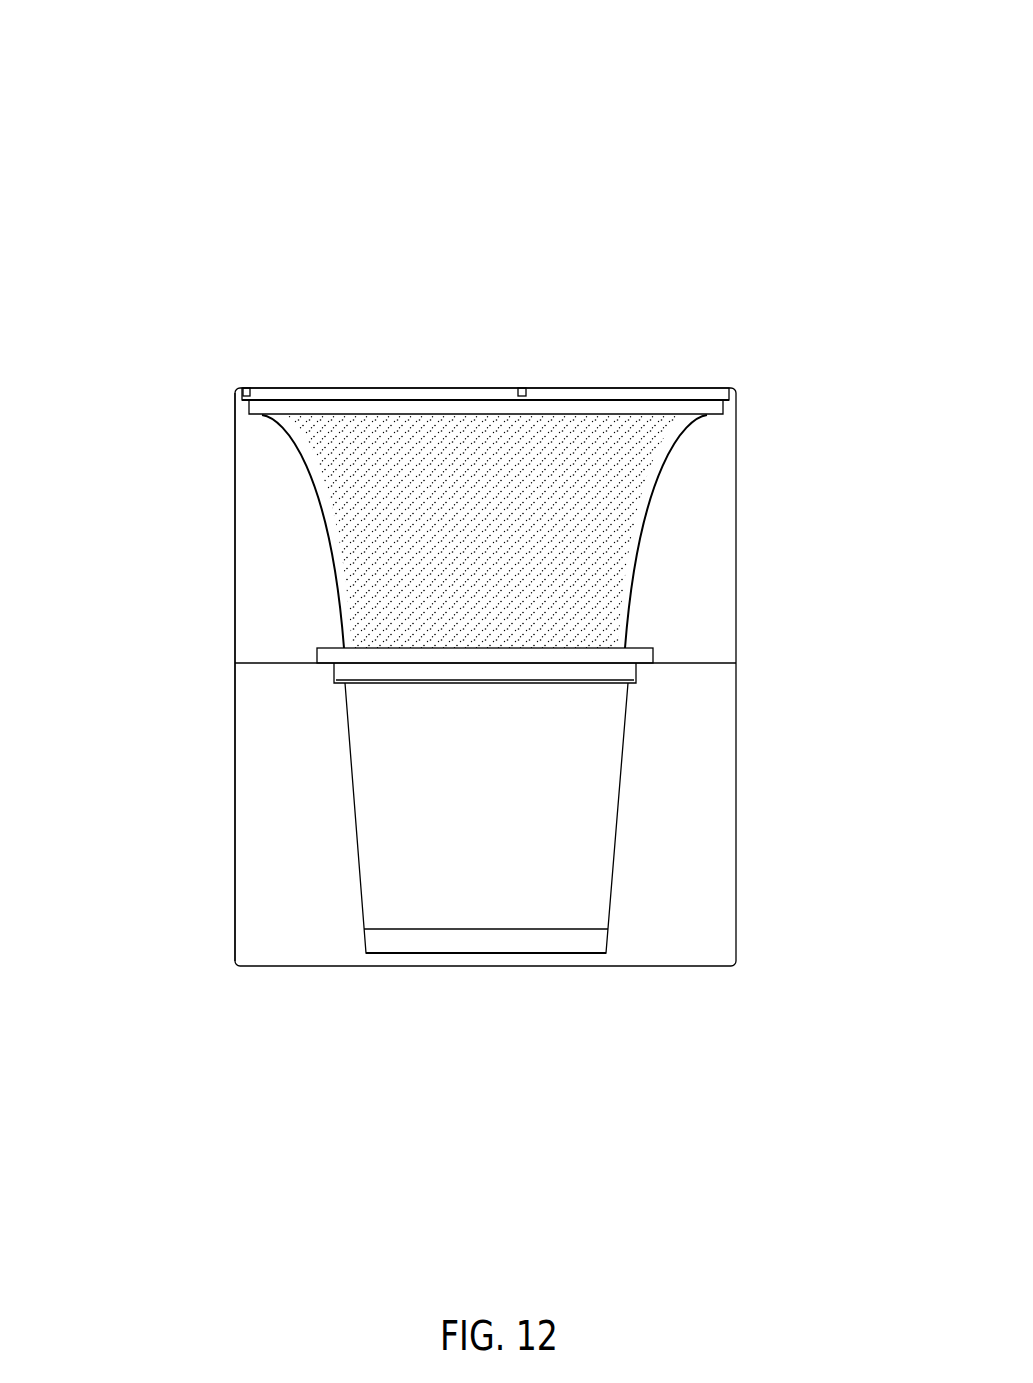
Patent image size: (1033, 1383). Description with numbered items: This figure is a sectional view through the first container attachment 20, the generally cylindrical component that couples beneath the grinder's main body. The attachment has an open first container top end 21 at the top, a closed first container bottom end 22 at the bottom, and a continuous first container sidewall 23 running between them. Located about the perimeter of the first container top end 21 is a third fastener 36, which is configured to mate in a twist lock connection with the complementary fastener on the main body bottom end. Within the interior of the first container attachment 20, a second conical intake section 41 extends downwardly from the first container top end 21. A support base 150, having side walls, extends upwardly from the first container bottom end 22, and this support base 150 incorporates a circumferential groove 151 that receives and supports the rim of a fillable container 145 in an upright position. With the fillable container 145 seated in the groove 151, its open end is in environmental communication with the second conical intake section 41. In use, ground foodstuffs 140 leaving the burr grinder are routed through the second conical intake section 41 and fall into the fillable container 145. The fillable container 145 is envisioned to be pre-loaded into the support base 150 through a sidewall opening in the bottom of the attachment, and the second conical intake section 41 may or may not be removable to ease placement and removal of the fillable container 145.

The first container attachment 20 is at (108, 184).
The first container top end 21 is at (325, 387).
The first container bottom end 22 is at (677, 966).
The first container sidewall 23 is at (235, 795).
The third fastener 36 is at (250, 389).
The second conical intake section 41 is at (648, 500).
The ground foodstuffs 140 is at (531, 549).
The fillable container 145 is at (545, 835).
The support base 150 is at (694, 817).
The circumferential groove 151 is at (275, 662).